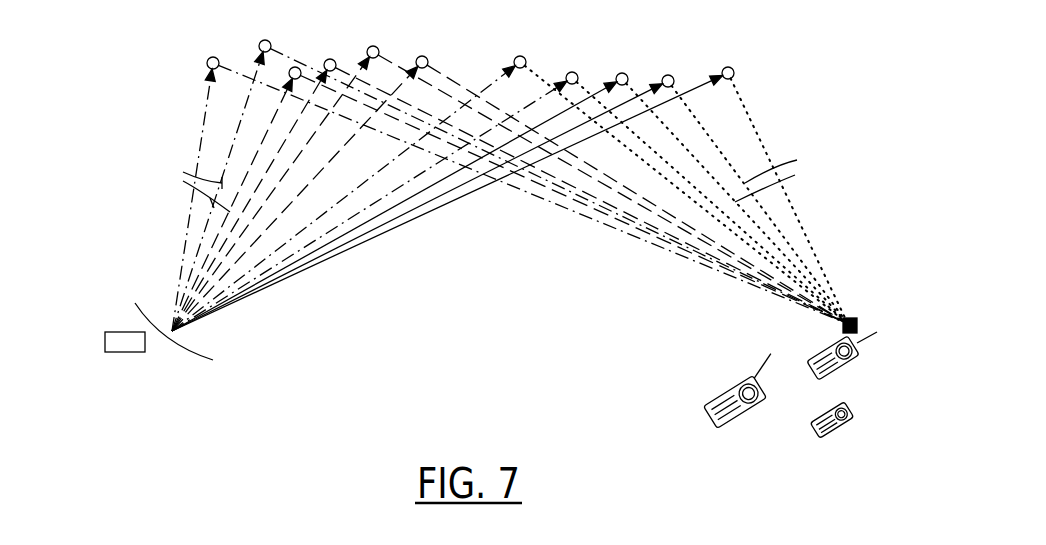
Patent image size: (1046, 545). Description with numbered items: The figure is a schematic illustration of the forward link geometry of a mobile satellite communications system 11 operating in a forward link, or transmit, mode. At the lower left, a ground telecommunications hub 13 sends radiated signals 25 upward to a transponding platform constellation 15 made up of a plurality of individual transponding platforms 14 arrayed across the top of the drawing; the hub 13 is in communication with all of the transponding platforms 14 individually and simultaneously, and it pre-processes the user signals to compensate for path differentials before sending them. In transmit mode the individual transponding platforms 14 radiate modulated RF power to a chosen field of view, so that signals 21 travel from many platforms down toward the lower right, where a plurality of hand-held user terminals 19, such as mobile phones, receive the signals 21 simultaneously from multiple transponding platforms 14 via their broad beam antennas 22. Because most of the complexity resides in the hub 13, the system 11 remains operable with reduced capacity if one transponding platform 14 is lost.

The mobile satellite communications system 11 is at (398, 49).
The ground telecommunications hub 13 is at (118, 332).
The transponding platforms 14 is at (524, 57).
The transponding platform constellation 15 is at (665, 61).
The hand-held user terminals 19 is at (820, 416).
The signals 21 is at (772, 160).
The broad beam antennas 22 is at (871, 341).
The radiated signals 25 is at (184, 176).